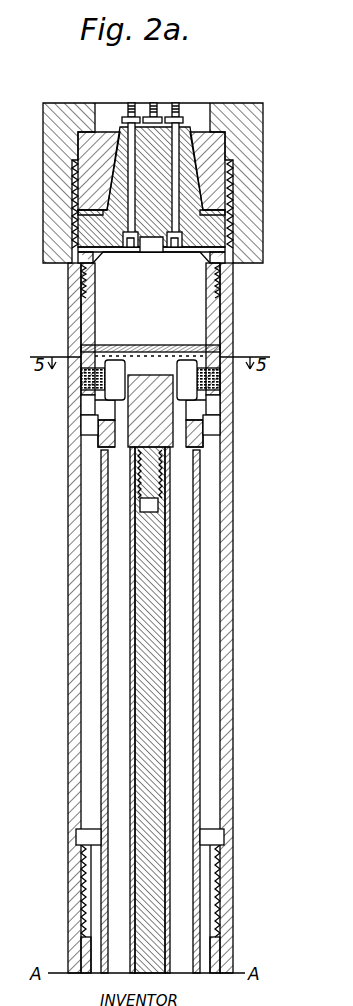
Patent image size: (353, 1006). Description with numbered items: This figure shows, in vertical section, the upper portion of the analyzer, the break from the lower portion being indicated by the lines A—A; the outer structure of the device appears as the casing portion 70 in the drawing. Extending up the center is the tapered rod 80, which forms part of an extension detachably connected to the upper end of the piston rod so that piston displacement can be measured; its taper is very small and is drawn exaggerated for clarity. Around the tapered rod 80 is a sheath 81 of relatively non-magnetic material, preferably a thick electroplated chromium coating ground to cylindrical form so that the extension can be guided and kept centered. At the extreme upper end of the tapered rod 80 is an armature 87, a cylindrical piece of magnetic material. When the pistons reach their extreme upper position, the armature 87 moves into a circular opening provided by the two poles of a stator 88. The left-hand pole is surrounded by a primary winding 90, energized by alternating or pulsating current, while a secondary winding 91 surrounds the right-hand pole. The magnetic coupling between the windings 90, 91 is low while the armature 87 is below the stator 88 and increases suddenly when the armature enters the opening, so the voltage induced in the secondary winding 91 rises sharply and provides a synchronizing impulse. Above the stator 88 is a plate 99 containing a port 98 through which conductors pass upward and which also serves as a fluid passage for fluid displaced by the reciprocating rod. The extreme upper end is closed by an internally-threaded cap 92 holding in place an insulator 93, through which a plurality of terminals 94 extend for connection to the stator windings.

The outer tube 70 is at (60, 574).
The tapered rod 80 is at (165, 562).
The sheath 81 is at (197, 698).
The armature 87 is at (128, 405).
The stator 88 is at (222, 385).
The primary winding 90 is at (120, 370).
The secondary winding 91 is at (185, 372).
The cap 92 is at (237, 108).
The insulator 93 is at (200, 135).
The terminals 94 is at (131, 103).
The port 98 is at (106, 345).
The plate 99 is at (168, 345).